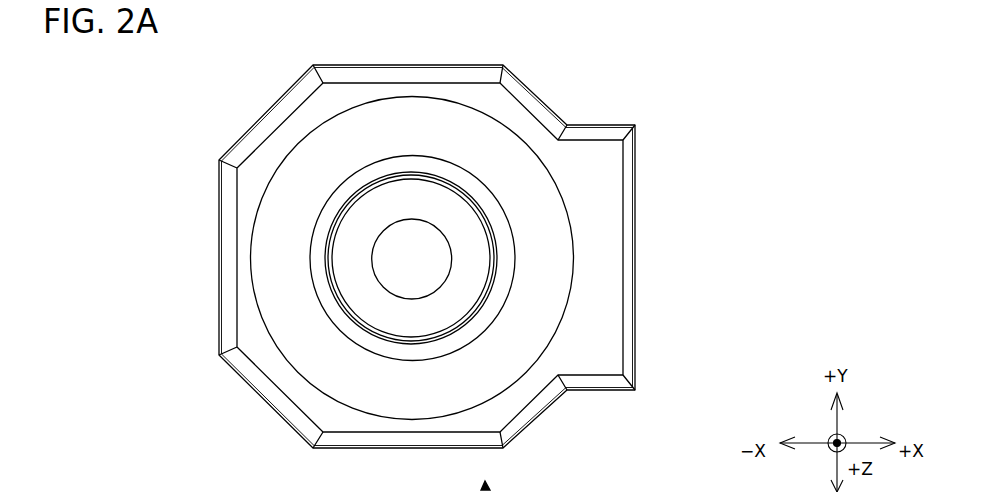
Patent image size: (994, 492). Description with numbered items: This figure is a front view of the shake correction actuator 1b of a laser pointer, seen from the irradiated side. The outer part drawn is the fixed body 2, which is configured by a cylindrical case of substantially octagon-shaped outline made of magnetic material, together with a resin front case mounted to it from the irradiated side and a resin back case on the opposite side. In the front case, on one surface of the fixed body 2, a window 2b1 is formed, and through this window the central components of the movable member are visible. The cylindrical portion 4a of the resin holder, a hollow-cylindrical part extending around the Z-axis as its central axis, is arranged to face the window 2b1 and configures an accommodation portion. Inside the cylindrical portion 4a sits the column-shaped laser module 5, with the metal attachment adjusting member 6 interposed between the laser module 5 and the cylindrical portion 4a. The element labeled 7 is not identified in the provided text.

The shake correction actuator 1b is at (757, 161).
The fixed body 2 is at (259, 119).
The window 2b1 is at (326, 229).
The cylindrical portion 4a is at (326, 262).
The laser module 5 is at (430, 263).
The attachment adjusting member 6 is at (471, 222).
The stepped portion 7 is at (330, 305).